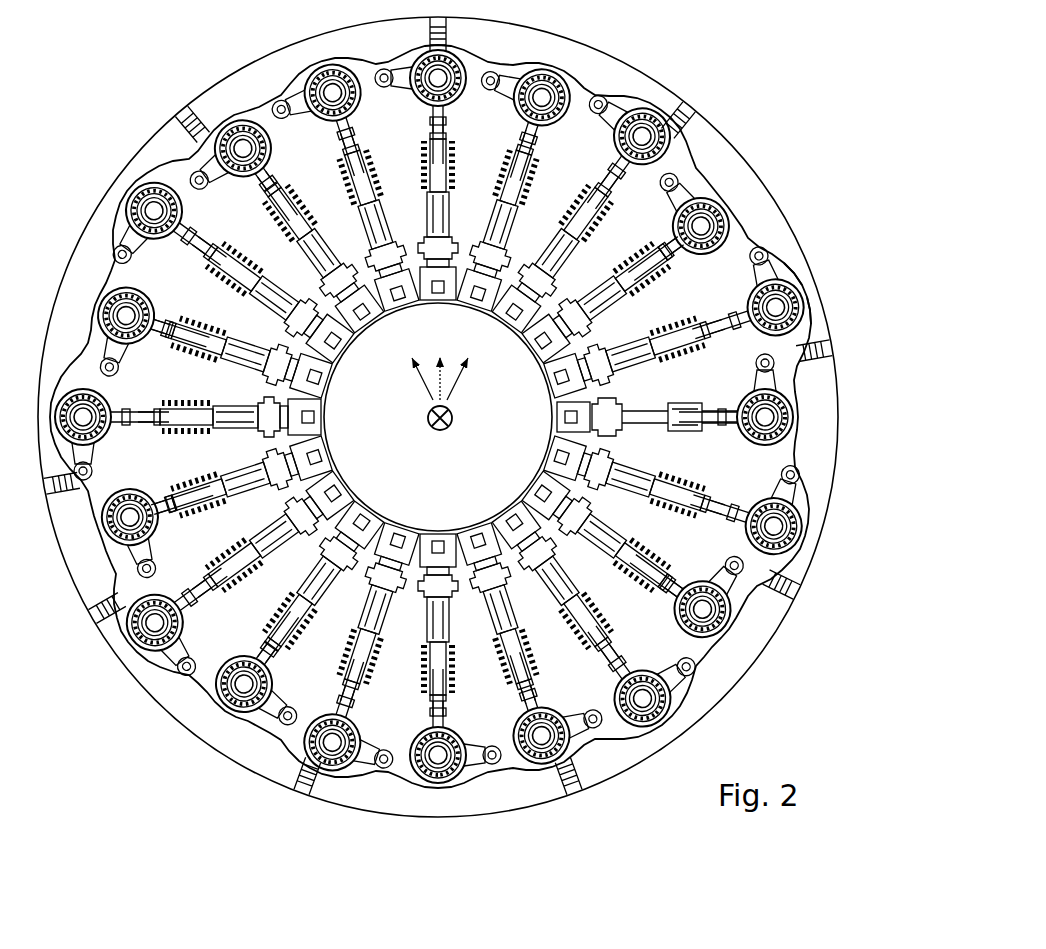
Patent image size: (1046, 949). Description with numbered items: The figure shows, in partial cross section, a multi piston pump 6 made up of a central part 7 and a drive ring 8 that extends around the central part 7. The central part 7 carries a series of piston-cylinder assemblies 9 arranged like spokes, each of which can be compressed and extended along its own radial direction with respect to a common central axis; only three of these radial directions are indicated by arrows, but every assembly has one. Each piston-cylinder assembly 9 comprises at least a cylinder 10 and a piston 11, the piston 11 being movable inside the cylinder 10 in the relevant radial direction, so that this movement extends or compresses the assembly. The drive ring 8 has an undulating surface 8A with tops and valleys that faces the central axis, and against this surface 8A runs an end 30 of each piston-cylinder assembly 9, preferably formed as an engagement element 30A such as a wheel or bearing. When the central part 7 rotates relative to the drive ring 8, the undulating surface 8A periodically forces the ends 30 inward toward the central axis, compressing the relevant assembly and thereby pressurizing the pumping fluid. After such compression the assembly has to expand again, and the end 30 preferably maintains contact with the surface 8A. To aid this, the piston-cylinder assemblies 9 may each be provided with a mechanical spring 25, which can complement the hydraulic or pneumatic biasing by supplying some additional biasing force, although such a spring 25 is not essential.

The multi piston pump 6 is at (72, 100).
The central part 7 is at (82, 375).
The drive ring 8 is at (232, 96).
The undulating surface 8A is at (698, 170).
The piston-cylinder assembly 9 is at (460, 419).
The cylinder 10 is at (678, 398).
The piston 11 is at (675, 420).
The mechanical spring 25 is at (592, 198).
The end 30 is at (800, 295).
The engagement element 30A is at (803, 318).